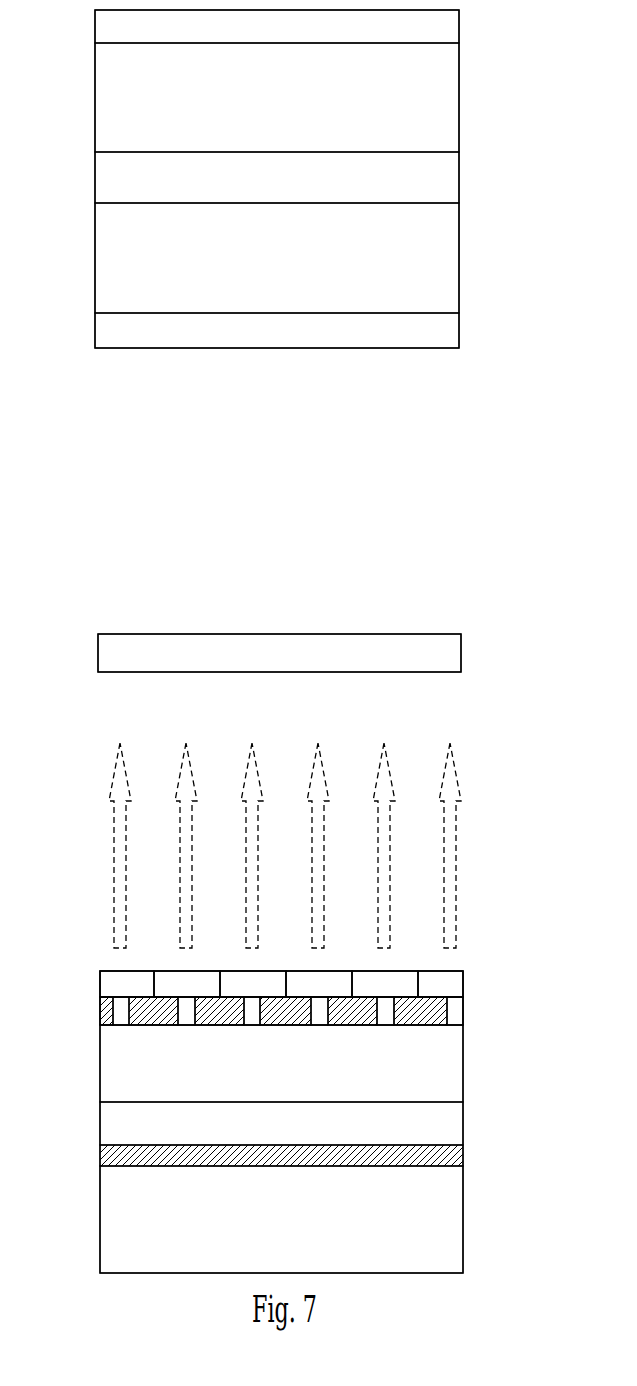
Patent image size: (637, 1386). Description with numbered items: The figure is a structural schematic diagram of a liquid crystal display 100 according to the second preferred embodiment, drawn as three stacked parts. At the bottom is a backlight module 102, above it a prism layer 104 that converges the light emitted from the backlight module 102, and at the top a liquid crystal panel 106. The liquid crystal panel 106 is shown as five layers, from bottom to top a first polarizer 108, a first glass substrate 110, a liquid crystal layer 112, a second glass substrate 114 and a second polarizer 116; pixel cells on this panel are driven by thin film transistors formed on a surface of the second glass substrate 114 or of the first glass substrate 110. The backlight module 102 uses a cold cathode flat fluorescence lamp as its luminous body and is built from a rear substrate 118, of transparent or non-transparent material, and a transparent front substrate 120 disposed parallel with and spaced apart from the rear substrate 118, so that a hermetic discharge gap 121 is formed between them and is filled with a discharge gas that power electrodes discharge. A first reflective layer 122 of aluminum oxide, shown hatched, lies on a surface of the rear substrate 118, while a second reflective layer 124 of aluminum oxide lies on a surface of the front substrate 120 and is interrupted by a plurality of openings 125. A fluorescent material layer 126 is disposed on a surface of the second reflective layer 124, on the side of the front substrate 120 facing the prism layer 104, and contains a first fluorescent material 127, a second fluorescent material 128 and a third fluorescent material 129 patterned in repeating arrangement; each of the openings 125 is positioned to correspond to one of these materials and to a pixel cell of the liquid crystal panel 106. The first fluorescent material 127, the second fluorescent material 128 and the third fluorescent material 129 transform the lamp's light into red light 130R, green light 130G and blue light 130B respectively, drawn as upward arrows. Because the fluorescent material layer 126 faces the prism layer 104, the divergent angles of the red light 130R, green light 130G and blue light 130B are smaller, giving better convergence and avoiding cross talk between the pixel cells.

The liquid crystal display 100 is at (465, 598).
The backlight module 102 is at (466, 1053).
The prism layer 104 is at (103, 655).
The liquid crystal panel 106 is at (469, 156).
The first polarizer 108 is at (103, 330).
The first glass substrate 110 is at (103, 272).
The liquid crystal layer 112 is at (103, 177).
The second glass substrate 114 is at (103, 102).
The second polarizer 116 is at (103, 27).
The rear substrate 118 is at (104, 1218).
The front substrate 120 is at (104, 1082).
The discharge gap 121 is at (458, 1123).
The first reflective layer 122 is at (104, 1155).
The second reflective layer 124 is at (104, 1013).
The openings 125 is at (119, 1017).
The fluorescent material layer 126 is at (104, 985).
The first fluorescent material 127 is at (141, 983).
The second fluorescent material 128 is at (164, 983).
The third fluorescent material 129 is at (230, 983).
The red light 130R is at (122, 800).
The green light 130G is at (188, 800).
The blue light 130B is at (254, 800).